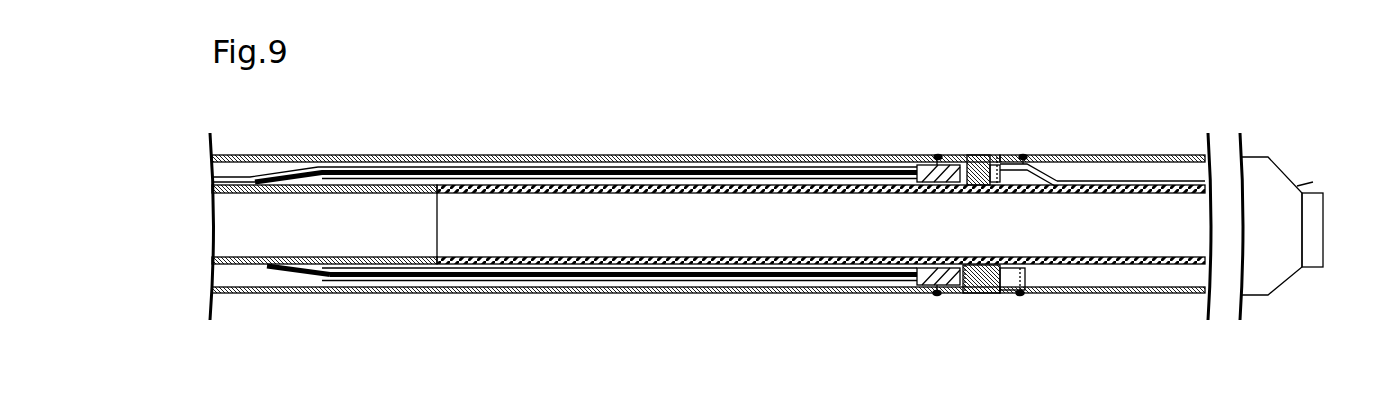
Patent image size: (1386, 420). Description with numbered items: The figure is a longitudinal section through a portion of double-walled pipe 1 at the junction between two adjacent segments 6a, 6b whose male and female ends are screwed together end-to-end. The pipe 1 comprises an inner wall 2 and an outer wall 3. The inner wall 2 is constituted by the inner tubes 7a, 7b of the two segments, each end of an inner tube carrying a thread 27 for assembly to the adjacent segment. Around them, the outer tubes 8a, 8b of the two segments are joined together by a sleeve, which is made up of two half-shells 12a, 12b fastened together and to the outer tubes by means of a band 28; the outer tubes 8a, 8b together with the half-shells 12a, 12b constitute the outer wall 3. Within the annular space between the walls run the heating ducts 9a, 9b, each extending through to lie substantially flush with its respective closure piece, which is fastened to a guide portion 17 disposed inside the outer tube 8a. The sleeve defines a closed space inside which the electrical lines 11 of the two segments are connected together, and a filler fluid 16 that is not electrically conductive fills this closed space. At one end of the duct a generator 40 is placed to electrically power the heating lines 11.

The double-walled pipe 1 is at (356, 108).
The inner wall 2 is at (908, 196).
The outer wall 3 is at (918, 158).
The segment 6a is at (433, 305).
The segment 6b is at (1108, 302).
The inner tube 7a is at (343, 183).
The inner tube 7b is at (1118, 160).
The outer tube 8a is at (860, 158).
The outer tube 8b is at (1140, 295).
The heating duct 9a is at (906, 165).
The heating duct 9b is at (1062, 164).
The electrical lines 11 is at (995, 160).
The half-shell 12a is at (964, 296).
The half-shell 12b is at (998, 157).
The filler fluid 16 is at (968, 157).
The guide portion 17 is at (438, 170).
The thread 27 is at (436, 266).
The band 28 is at (978, 294).
The generator 40 is at (1299, 185).